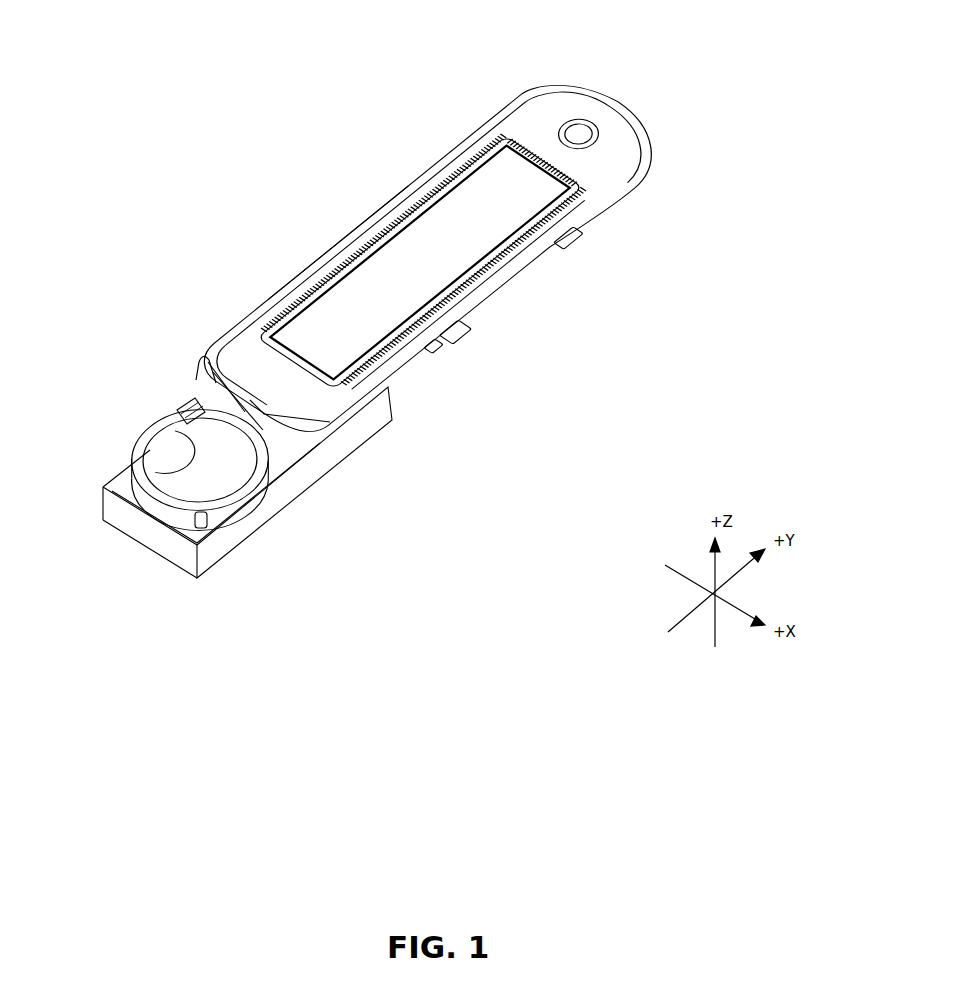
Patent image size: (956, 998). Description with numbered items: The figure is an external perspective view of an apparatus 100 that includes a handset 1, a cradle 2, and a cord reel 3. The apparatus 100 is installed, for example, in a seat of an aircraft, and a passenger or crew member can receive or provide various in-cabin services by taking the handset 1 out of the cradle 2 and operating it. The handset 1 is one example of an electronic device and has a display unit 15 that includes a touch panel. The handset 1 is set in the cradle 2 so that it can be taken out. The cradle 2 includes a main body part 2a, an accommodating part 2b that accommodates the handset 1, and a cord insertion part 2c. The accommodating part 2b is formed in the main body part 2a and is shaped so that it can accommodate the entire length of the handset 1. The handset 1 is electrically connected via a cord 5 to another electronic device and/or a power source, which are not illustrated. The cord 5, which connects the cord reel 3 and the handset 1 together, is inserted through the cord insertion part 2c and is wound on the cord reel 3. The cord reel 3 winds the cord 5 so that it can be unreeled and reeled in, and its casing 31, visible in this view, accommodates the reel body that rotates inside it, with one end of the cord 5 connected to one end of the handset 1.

The apparatus 100 is at (688, 118).
The handset 1 is at (253, 325).
The cradle 2 is at (566, 92).
The main body part 2a is at (343, 240).
The accommodating part 2b is at (520, 137).
The cord insertion part 2c is at (257, 403).
The cord reel 3 is at (158, 513).
The casing 31 is at (199, 470).
The cord 5 is at (192, 375).
The display unit 15 is at (427, 273).